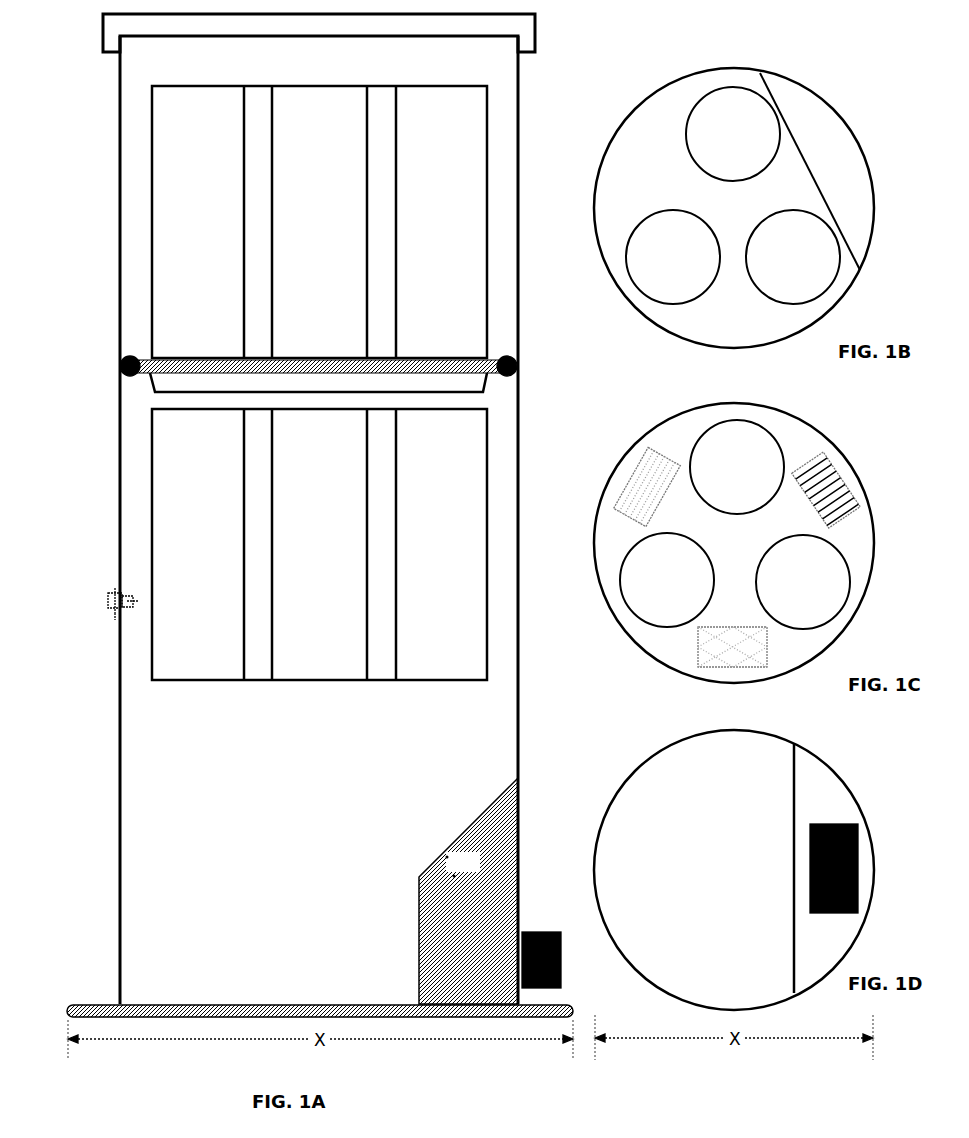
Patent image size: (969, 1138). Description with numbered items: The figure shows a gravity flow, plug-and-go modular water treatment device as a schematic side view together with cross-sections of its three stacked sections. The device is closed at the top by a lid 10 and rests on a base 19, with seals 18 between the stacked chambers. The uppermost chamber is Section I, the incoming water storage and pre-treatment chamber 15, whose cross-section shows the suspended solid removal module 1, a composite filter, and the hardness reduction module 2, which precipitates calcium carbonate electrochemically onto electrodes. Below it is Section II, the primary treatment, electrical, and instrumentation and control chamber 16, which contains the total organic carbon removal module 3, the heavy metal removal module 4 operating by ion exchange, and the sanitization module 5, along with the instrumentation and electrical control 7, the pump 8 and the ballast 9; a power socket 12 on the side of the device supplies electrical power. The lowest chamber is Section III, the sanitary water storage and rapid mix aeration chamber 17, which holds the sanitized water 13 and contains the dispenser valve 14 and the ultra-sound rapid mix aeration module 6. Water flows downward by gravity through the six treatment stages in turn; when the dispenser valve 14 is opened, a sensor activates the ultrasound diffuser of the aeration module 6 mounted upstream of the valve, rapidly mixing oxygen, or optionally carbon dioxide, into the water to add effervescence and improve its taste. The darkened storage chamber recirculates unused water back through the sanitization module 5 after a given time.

In FIG. 1B, the suspended solid removal module 1 is at (733, 136).
In FIG. 1B, the hardness reduction module 2 is at (673, 257).
In FIG. 1C, the total organic carbon removal module 3 is at (737, 467).
In FIG. 1C, the heavy metal removal module 4 is at (667, 580).
In FIG. 1C, the sanitization module 5 is at (803, 583).
In FIG. 1D, the ultra-sound rapid mix aeration module 6 is at (860, 864).
In FIG. 1C, the instrumentation and electrical control 7 is at (840, 475).
In FIG. 1C, the pump 8 is at (767, 640).
In FIG. 1C, the ballast 9 is at (665, 500).
In FIG. 1A, the lid 10 is at (103, 28).
In FIG. 1A, the power socket 12 is at (108, 608).
In FIG. 1A, the sanitized water 13 is at (310, 748).
In FIG. 1A, the dispenser valve 14 is at (418, 950).
In FIG. 1A, the Section I incoming water storage and pre-treatment chamber 15 is at (118, 36).
In FIG. 1A, the Section II primary treatment, electrical, and instrumentation and control chambe 16 is at (120, 718).
In FIG. 1A, the Section III sanitary water storage and rapid mix aeration chamber 17 is at (63, 1002).
In FIG. 1A, the seals 18 is at (120, 392).
In FIG. 1A, the base 19 is at (322, 1003).